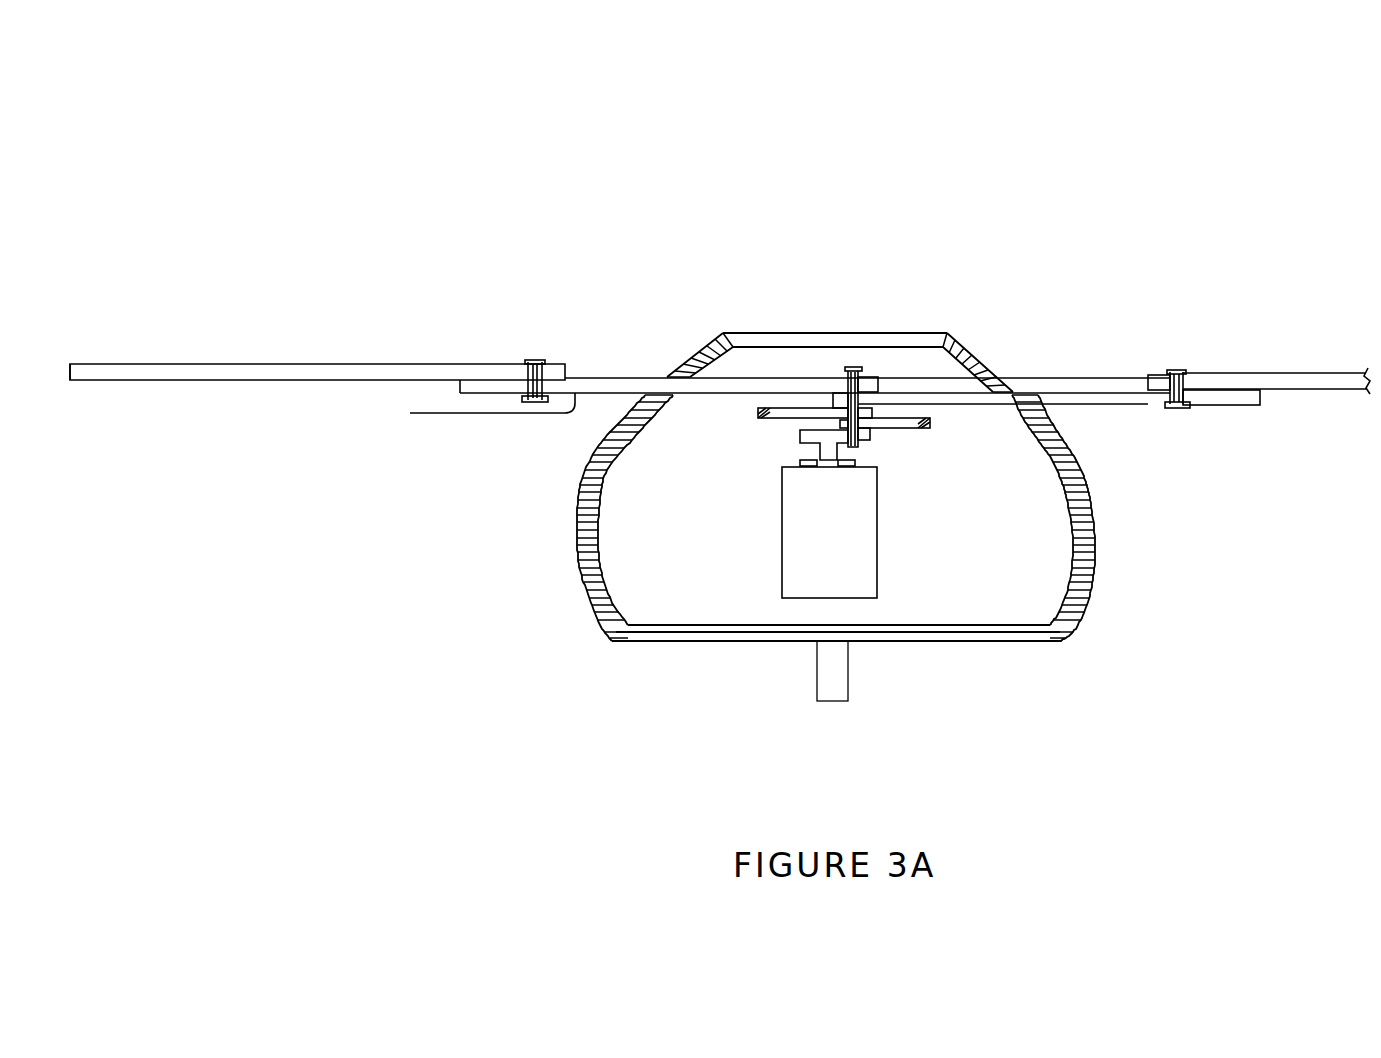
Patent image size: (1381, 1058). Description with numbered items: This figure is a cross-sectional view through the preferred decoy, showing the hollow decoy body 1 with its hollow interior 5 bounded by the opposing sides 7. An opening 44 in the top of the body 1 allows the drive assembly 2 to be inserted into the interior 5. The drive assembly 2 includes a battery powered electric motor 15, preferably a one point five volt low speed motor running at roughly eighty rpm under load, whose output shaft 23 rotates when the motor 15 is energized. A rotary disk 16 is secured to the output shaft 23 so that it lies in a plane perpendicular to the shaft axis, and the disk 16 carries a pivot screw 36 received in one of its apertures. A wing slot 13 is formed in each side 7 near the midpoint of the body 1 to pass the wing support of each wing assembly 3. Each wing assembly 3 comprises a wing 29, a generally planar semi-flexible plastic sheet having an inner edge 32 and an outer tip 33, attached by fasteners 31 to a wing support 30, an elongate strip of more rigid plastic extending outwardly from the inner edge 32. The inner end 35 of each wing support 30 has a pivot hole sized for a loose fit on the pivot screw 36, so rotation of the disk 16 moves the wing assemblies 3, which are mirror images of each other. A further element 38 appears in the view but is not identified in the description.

The hollow decoy body 1 is at (792, 458).
The drive assembly 2 is at (877, 450).
The wing assembly 3 is at (587, 374).
The hollow interior 5 is at (635, 546).
The opposing sides 7 is at (600, 438).
The wing slot 13 is at (663, 375).
The electric motor 15 is at (807, 580).
The rotary disk 16 is at (800, 437).
The output shaft 23 is at (820, 462).
The wing 29 is at (263, 368).
The wing support 30 is at (410, 413).
The fasteners 31 is at (530, 360).
The inner edge 32 is at (1145, 373).
The outer tip 33 is at (70, 372).
The inner end 35 is at (880, 384).
The pivot screw 36 is at (852, 367).
The contact plate 38 is at (760, 410).
The opening 44 is at (790, 333).